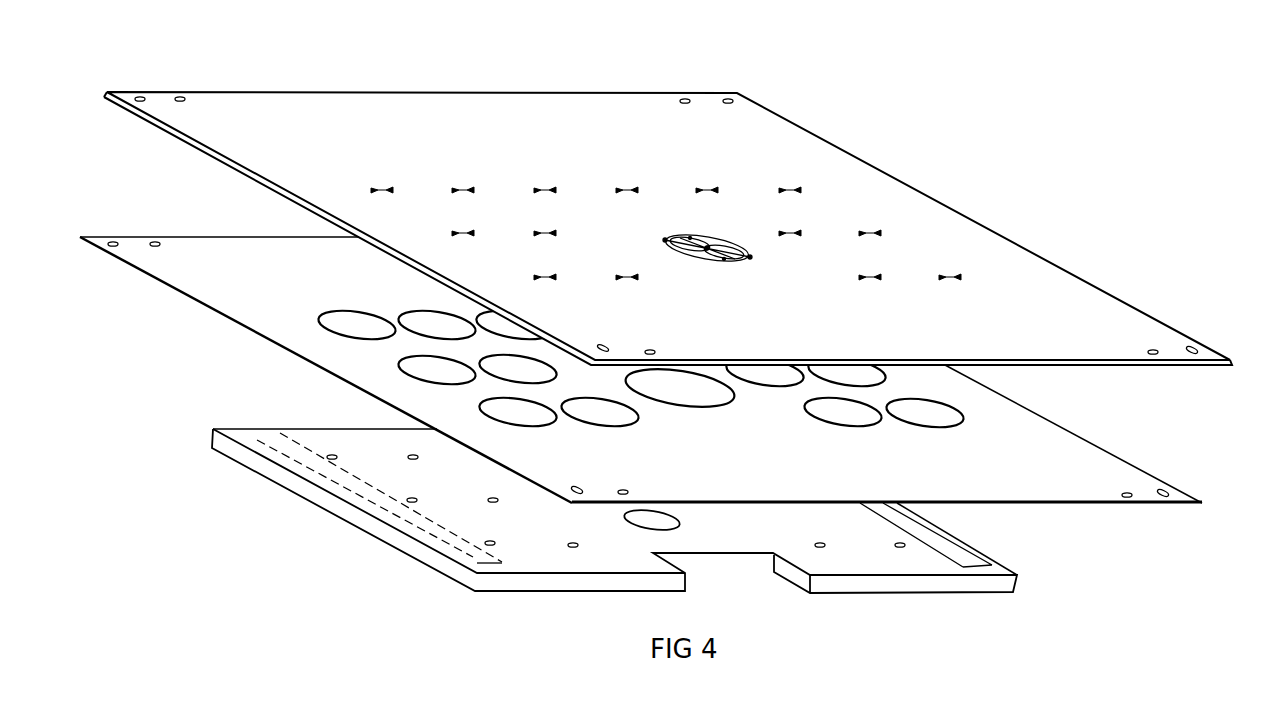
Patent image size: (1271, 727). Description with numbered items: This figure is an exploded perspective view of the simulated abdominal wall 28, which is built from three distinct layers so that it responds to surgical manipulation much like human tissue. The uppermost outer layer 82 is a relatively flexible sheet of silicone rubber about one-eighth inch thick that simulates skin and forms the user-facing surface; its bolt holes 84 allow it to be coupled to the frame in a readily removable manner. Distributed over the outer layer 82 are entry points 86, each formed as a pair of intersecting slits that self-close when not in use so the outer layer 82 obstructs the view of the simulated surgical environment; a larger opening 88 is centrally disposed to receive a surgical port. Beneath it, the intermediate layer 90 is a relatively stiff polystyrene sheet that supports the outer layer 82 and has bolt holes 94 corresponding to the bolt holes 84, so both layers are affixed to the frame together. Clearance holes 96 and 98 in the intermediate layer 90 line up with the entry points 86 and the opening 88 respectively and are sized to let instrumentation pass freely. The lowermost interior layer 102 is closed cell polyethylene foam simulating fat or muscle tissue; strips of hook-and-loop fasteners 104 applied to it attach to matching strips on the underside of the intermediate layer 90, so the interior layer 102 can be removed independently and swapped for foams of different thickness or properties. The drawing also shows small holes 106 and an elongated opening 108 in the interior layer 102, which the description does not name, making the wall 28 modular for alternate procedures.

The simulated abdominal wall 28 is at (878, 69).
The outer layer 82 is at (798, 143).
The bolt holes 84 is at (181, 96).
The entry points 86 is at (871, 231).
The larger opening 88 is at (723, 238).
The intermediate layer 90 is at (1057, 432).
The bolt holes 94 is at (156, 241).
The clearance holes 96 is at (540, 426).
The clearance hole 98 is at (700, 407).
The interior layer 102 is at (1002, 566).
The hook-and-loop fasteners 104 is at (282, 433).
The holes of base plate 106 is at (900, 548).
The elliptical opening of base plate 108 is at (640, 531).